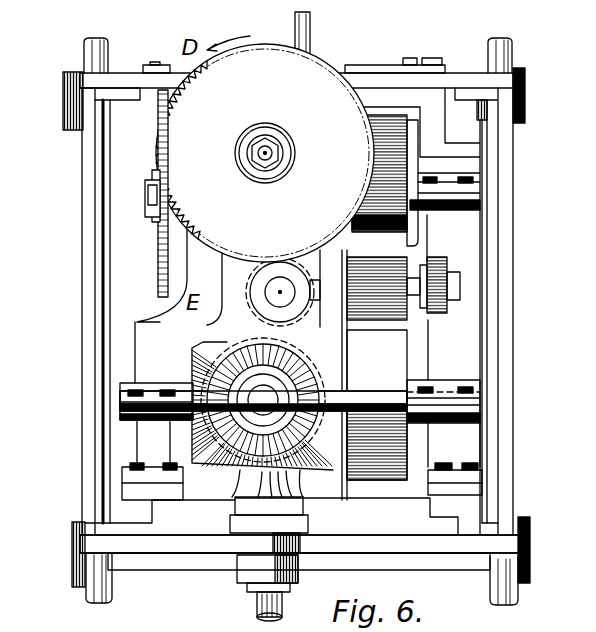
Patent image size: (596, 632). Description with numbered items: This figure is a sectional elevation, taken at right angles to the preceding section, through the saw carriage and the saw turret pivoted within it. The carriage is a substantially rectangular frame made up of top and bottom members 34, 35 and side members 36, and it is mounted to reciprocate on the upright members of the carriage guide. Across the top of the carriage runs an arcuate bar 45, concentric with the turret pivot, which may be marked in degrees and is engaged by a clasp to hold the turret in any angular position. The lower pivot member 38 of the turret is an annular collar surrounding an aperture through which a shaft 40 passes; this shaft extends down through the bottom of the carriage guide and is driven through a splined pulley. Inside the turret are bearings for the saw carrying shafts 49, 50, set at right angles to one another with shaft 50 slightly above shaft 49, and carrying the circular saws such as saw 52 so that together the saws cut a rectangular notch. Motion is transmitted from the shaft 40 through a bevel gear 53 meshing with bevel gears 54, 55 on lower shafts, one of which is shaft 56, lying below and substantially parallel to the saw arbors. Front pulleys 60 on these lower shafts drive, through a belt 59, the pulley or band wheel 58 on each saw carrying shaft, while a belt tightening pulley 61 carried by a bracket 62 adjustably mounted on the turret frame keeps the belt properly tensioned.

The top member 34 is at (347, 72).
The bottom member 35 is at (217, 545).
The side members 36 is at (95, 275).
The pivot member 38 is at (250, 502).
The shaft 40 is at (263, 603).
The arcuate bar 45 is at (395, 62).
The saw carrying shaft 49 is at (152, 213).
The saw carrying shaft 50 is at (265, 147).
The circular saw 52 is at (283, 277).
The bevel gear 53 is at (228, 468).
The bevel gear 54 is at (203, 370).
The bevel gear 55 is at (320, 370).
The shaft 56 is at (193, 425).
The pulley or band wheel 58 is at (383, 157).
The belt or band 59 is at (275, 335).
The front pulley 60 is at (207, 330).
The belt tightening pulley 61 is at (393, 272).
The bracket 62 is at (435, 278).